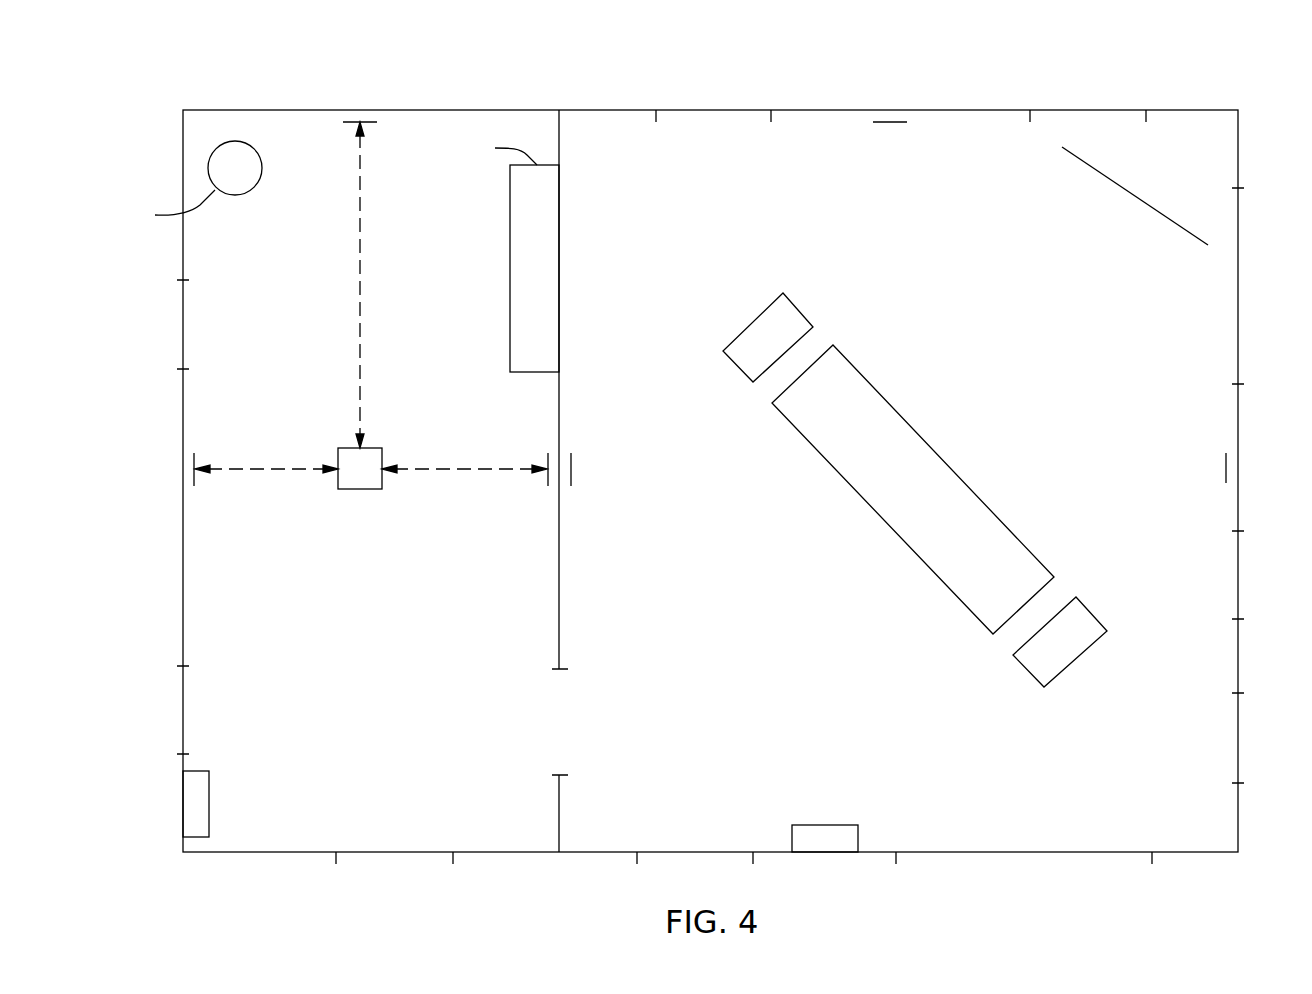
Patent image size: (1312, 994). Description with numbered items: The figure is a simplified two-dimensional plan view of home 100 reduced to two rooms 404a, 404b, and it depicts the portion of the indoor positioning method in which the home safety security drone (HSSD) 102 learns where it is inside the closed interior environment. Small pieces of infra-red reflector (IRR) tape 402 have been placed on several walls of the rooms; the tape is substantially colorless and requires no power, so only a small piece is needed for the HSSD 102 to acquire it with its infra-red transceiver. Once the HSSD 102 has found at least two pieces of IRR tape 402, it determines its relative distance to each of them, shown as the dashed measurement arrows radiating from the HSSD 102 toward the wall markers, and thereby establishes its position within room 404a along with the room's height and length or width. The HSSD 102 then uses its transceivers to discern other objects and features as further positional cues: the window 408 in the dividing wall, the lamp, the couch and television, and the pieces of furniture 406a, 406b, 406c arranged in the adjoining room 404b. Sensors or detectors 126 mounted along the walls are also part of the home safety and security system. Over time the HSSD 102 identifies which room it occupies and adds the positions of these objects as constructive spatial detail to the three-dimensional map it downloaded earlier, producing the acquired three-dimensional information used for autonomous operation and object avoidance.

The home/building 100 is at (1146, 57).
The home safety security drone (HSSD) 102 is at (360, 489).
The sensor(s)/detector(s) 126 is at (209, 804).
The infra-red reflector (IRR) tape 402 is at (360, 122).
The room 404a is at (266, 285).
The room 404b is at (1120, 752).
The furniture 406a is at (762, 312).
The furniture 406b is at (913, 489).
The furniture 406c is at (1090, 607).
The window 408 is at (597, 708).